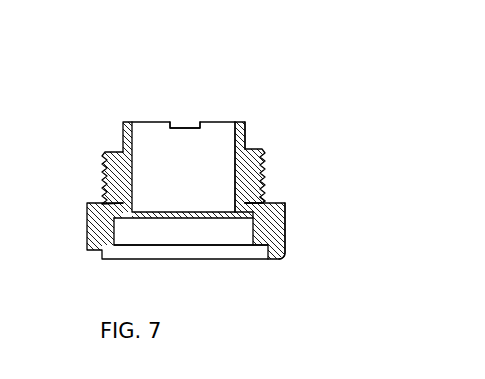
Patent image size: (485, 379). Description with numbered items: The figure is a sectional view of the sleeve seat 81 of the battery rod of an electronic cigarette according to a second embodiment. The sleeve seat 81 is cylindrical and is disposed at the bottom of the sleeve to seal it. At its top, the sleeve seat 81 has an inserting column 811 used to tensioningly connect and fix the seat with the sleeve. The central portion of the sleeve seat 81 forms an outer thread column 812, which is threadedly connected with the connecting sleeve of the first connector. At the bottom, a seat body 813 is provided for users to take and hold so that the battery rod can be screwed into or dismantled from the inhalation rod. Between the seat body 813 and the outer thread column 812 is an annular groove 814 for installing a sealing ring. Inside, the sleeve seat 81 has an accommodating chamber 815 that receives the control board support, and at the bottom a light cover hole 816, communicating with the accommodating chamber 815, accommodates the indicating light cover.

The sleeve seat 81 is at (122, 134).
The inserting column 811 is at (246, 135).
The outer thread column 812 is at (264, 156).
The seat body 813 is at (283, 227).
The annular groove 814 is at (261, 197).
The accommodating chamber 815 is at (213, 142).
The light cover hole 816 is at (193, 233).